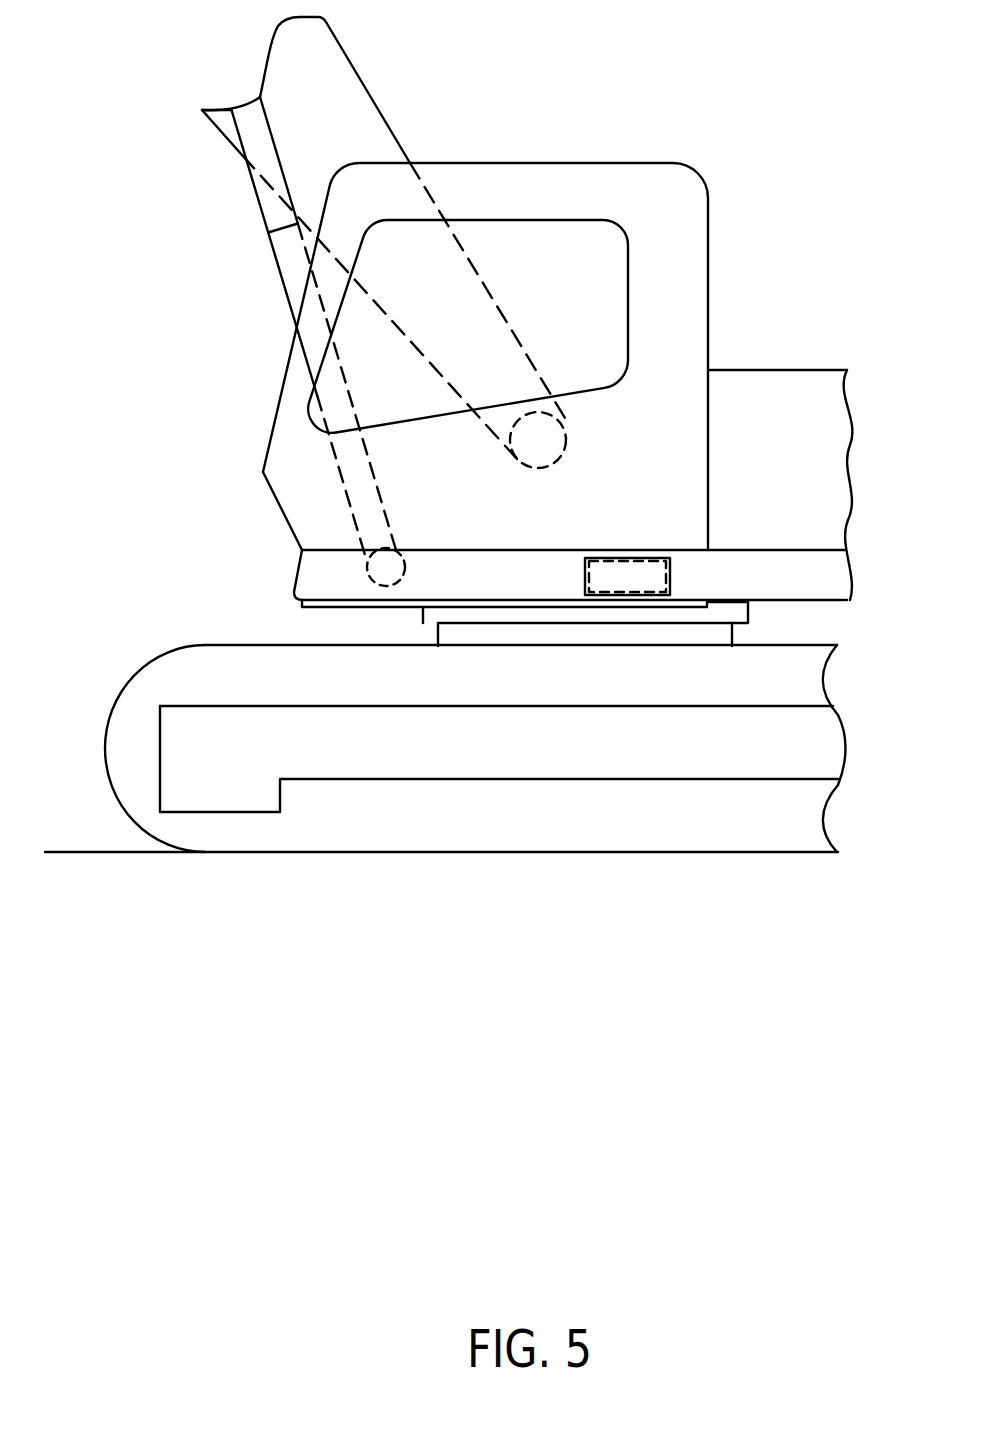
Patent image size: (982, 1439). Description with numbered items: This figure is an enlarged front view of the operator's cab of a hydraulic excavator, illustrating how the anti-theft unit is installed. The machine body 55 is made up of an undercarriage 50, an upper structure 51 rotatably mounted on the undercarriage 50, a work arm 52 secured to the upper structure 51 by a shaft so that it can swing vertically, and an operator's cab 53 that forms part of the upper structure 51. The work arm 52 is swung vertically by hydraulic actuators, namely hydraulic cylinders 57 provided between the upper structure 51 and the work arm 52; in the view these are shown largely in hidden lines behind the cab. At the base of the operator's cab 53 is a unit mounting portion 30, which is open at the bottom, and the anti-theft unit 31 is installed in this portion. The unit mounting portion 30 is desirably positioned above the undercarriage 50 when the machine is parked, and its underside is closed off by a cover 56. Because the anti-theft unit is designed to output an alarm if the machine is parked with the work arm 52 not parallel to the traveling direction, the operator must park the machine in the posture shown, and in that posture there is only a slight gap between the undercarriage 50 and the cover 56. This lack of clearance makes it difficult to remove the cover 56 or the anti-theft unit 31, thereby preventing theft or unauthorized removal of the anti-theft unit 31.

The unit mounting portion 30 is at (650, 558).
The anti-theft unit 31 is at (655, 577).
The undercarriage 50 is at (597, 840).
The upper structure 51 is at (778, 380).
The work arm 52 is at (368, 112).
The operator's cab 53 is at (650, 172).
The machine body 55 is at (753, 192).
The cover 56 is at (315, 605).
The hydraulic cylinders 57 is at (273, 256).